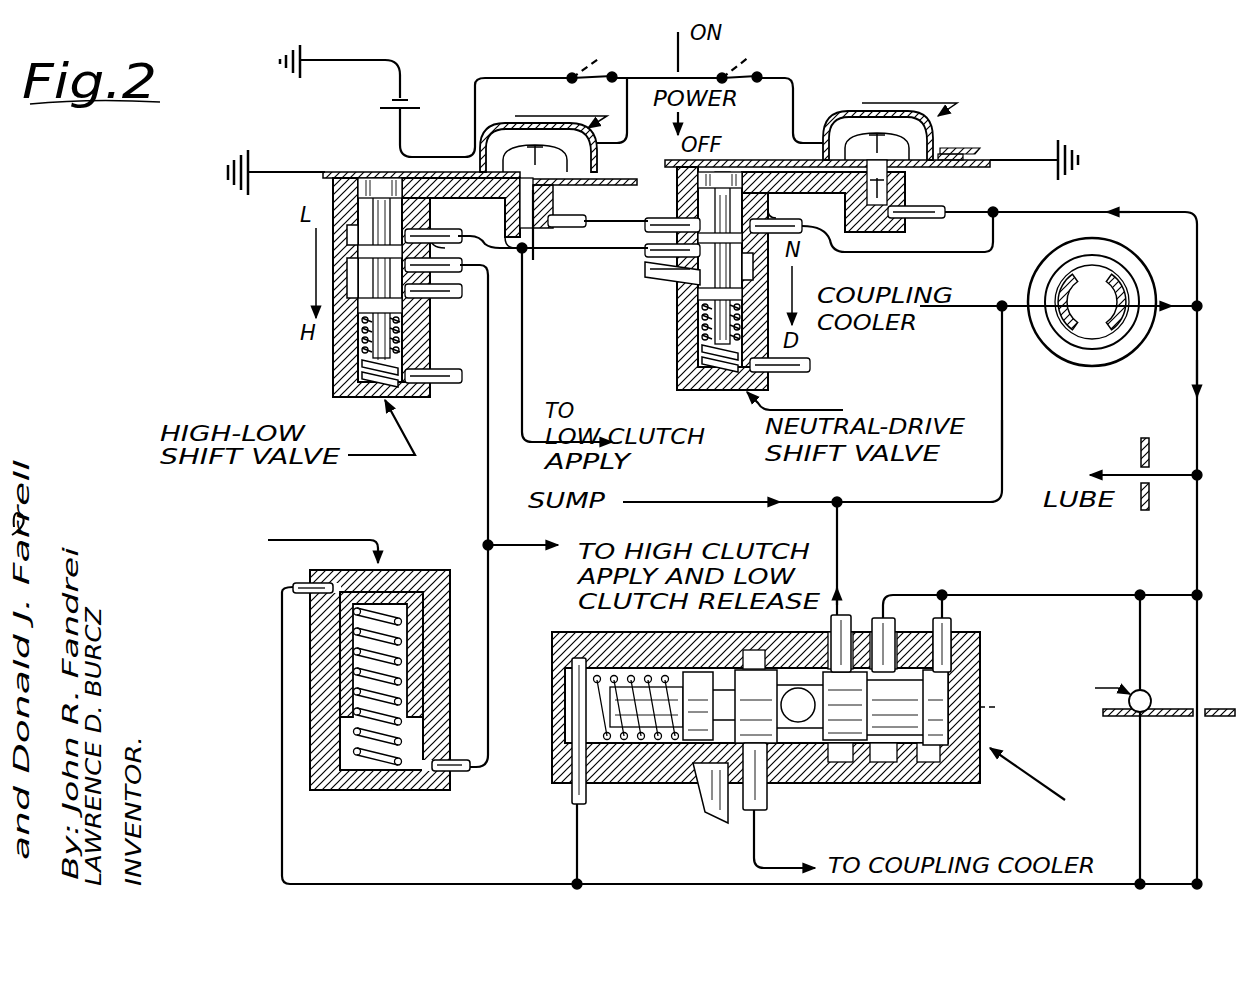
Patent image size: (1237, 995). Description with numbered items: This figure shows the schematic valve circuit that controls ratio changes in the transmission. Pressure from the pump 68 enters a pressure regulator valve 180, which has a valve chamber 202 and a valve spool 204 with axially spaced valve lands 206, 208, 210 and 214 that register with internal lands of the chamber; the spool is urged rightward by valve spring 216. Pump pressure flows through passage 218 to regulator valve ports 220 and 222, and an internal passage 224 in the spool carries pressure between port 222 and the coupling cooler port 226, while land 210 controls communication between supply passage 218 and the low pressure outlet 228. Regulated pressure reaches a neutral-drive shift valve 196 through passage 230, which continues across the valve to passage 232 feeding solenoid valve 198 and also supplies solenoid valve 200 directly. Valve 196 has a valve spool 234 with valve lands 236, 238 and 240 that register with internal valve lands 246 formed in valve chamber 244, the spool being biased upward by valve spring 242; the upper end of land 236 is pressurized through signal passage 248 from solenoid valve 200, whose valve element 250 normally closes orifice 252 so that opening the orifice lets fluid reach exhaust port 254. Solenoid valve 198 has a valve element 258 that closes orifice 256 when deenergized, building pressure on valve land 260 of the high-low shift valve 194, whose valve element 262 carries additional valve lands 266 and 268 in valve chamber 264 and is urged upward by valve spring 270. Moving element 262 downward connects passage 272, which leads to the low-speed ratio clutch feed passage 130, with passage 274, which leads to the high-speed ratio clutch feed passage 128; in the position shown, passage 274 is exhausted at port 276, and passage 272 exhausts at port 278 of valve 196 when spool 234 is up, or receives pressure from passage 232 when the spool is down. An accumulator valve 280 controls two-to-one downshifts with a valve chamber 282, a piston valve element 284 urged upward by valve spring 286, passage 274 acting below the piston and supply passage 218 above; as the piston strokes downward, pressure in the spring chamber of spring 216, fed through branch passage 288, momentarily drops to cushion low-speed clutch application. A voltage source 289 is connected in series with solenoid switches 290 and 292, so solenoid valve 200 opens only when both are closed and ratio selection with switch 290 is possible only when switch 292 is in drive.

The pump 68 is at (1122, 275).
The high-speed ratio clutch pressure feed passage 128 is at (489, 553).
The low-speed ratio clutch pressure feed passage 130 is at (522, 455).
The pressure regulator valve 180 is at (986, 628).
The high-low shift valve 194 is at (330, 362).
The neutral-drive shift valve 196 is at (676, 379).
The solenoid valve 198 is at (477, 140).
The solenoid valve 200 is at (950, 122).
The valve chamber 202 is at (754, 832).
The valve spool 204 is at (783, 678).
The valve land 206 is at (670, 705).
The valve land 208 is at (717, 680).
The valve land 210 is at (855, 677).
The valve land 214 is at (985, 664).
The valve spring 216 is at (572, 762).
The pump supply passage 218 is at (1196, 552).
The regulator valve port 220 is at (888, 620).
The regulator valve port 222 is at (950, 620).
The internal passage 224 is at (989, 704).
The coupling cooler port 226 is at (745, 792).
The low pressure outlet 228 is at (847, 612).
The passage 230 is at (943, 253).
The passage 232 is at (612, 224).
The valve spool 234 is at (655, 277).
The valve land 236 is at (682, 178).
The valve land 238 is at (740, 237).
The valve land 240 is at (700, 305).
The valve spring 242 is at (700, 352).
The valve chamber 244 is at (730, 210).
The solenoid armature 246 is at (732, 160).
The signal passage 248 is at (787, 140).
The valve element 250 is at (962, 143).
The orifice 252 is at (905, 168).
The exhaust port 254 is at (955, 148).
The solenoid valve orifice 256 is at (529, 253).
The valve element 258 is at (548, 182).
The valve land 260 is at (334, 192).
The valve element 262 is at (373, 265).
The valve chamber 264 is at (415, 343).
The valve land 266 is at (360, 247).
The valve land 268 is at (367, 307).
The valve spring 270 is at (345, 382).
The passage 272 is at (521, 256).
The passage 274 is at (487, 497).
The exhaust port 276 is at (415, 312).
The exhaust port 278 is at (695, 290).
The accumulator valve 280 is at (330, 653).
The valve chamber 282 is at (347, 730).
The piston valve element 284 is at (347, 632).
The valve spring 286 is at (357, 748).
The branch passage 288 is at (577, 846).
The voltage source 289 is at (442, 82).
The solenoid switch 290 is at (600, 67).
The solenoid switch 292 is at (764, 66).